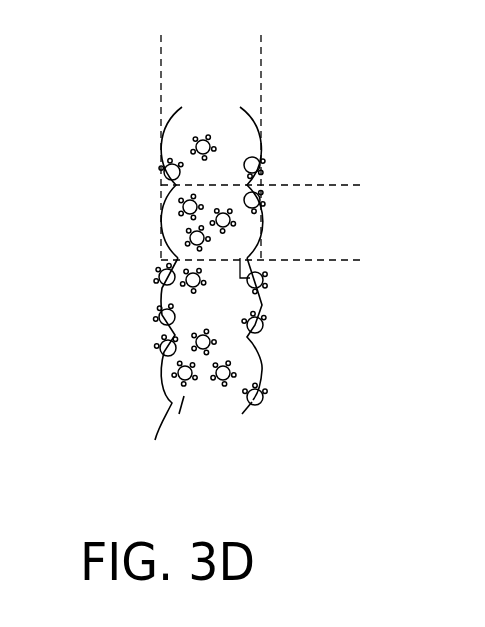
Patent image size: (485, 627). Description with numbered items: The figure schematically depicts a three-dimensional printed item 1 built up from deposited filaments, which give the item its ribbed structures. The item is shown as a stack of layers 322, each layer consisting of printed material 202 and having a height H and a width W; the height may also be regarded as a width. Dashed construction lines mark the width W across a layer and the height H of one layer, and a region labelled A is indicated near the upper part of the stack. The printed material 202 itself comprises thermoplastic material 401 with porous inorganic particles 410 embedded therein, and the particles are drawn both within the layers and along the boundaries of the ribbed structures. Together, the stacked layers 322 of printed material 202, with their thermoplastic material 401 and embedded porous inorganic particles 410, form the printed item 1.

The 3D item 1 is at (326, 175).
The printed material 202 is at (100, 254).
The layers 322 is at (100, 300).
The thermoplastic material 401 is at (245, 217).
The porous inorganic particles 410 is at (170, 380).
The region A is at (265, 180).
The width W is at (161, 65).
The height H is at (357, 185).